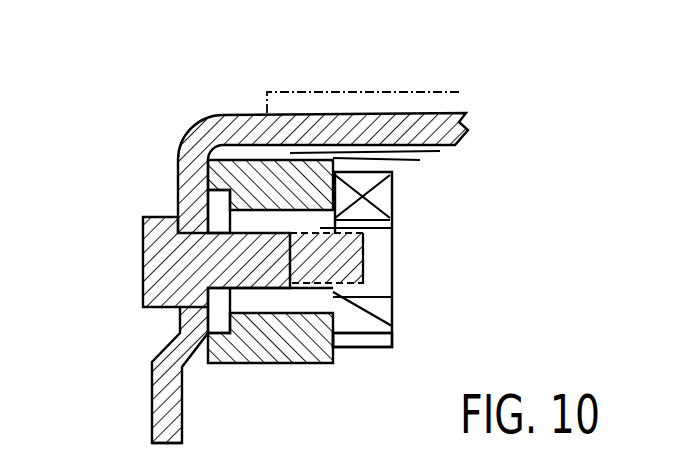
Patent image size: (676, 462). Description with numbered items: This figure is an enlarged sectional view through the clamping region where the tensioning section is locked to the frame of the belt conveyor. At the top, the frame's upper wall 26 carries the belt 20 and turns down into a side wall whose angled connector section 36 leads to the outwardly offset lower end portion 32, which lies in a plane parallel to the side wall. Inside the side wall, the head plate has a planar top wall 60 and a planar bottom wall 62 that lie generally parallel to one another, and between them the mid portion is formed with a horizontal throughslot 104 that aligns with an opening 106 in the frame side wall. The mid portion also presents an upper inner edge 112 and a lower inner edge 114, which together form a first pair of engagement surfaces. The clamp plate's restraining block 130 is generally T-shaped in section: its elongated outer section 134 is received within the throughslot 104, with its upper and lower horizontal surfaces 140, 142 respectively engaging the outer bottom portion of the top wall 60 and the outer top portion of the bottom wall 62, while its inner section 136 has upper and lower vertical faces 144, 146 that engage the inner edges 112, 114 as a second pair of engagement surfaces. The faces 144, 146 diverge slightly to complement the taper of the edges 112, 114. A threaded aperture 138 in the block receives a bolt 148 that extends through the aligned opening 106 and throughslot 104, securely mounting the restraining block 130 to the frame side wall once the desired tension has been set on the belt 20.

The belt 20 is at (418, 95).
The upper wall 26 is at (233, 115).
The outwardly offset lower end portion 32 is at (152, 412).
The angled connector section 36 is at (163, 350).
The top wall 60 is at (297, 158).
The bottom wall 62 is at (240, 363).
The throughslot 104 is at (262, 302).
The opening 106 is at (230, 217).
The upper inner edge 112 is at (440, 151).
The lower inner edge 114 is at (333, 347).
The restraining block 130 is at (398, 316).
The outer section 134 is at (395, 228).
The inner section 136 is at (385, 210).
The threaded aperture 138 is at (376, 283).
The upper horizontal surface 140 is at (375, 188).
The lower horizontal surface 142 is at (392, 297).
The upper vertical face 144 is at (420, 160).
The lower vertical face 146 is at (392, 328).
The bolt 148 is at (143, 228).